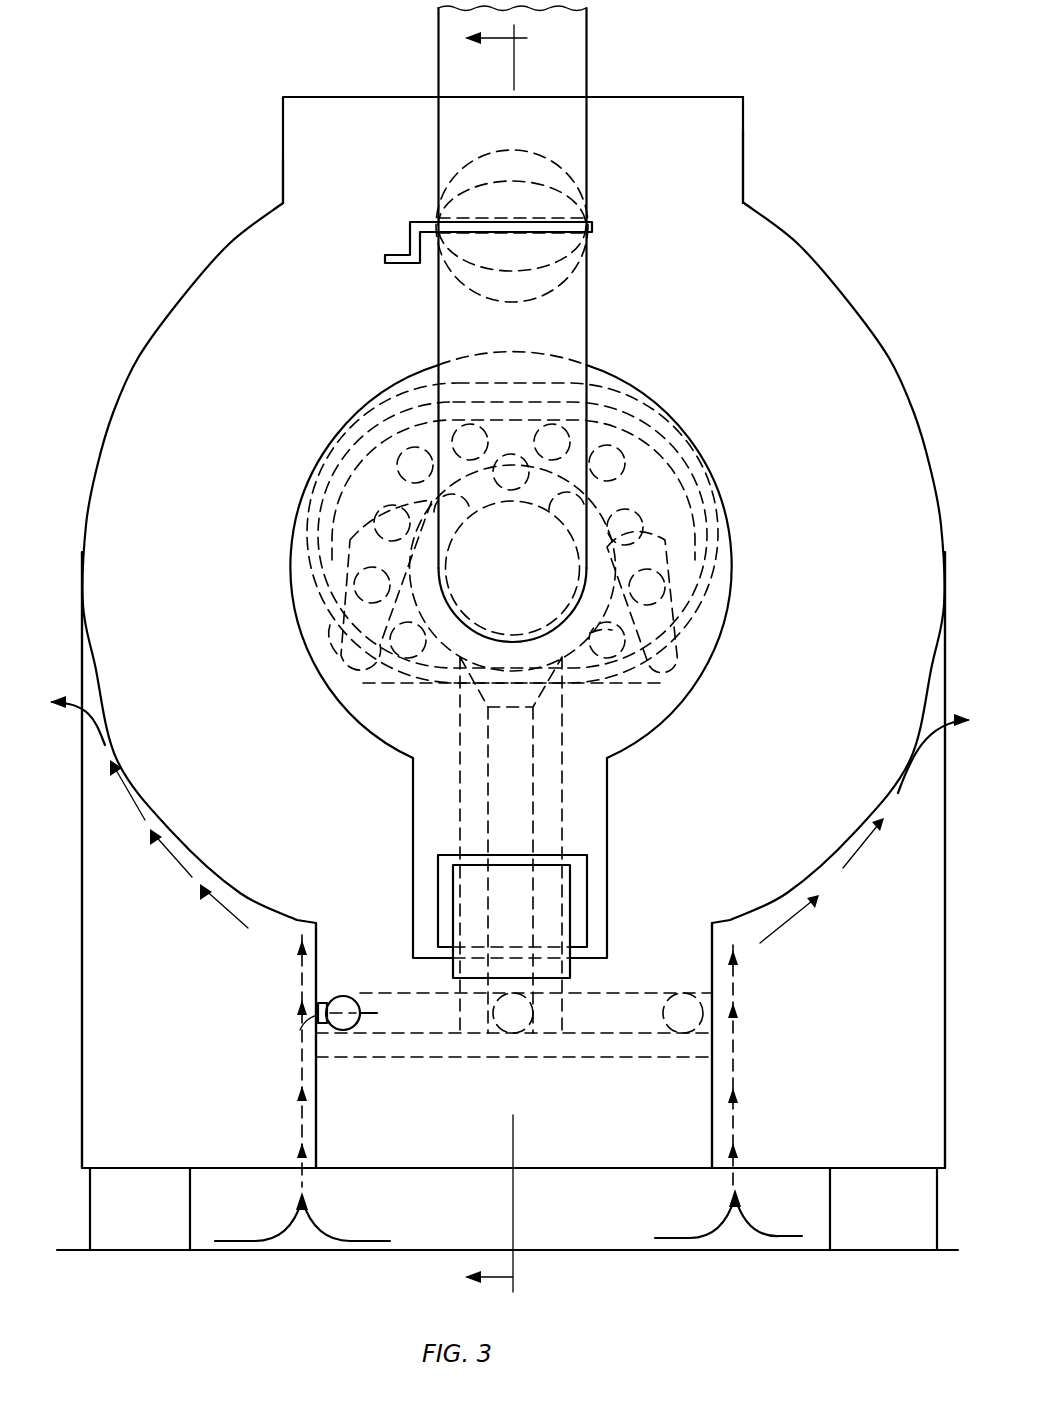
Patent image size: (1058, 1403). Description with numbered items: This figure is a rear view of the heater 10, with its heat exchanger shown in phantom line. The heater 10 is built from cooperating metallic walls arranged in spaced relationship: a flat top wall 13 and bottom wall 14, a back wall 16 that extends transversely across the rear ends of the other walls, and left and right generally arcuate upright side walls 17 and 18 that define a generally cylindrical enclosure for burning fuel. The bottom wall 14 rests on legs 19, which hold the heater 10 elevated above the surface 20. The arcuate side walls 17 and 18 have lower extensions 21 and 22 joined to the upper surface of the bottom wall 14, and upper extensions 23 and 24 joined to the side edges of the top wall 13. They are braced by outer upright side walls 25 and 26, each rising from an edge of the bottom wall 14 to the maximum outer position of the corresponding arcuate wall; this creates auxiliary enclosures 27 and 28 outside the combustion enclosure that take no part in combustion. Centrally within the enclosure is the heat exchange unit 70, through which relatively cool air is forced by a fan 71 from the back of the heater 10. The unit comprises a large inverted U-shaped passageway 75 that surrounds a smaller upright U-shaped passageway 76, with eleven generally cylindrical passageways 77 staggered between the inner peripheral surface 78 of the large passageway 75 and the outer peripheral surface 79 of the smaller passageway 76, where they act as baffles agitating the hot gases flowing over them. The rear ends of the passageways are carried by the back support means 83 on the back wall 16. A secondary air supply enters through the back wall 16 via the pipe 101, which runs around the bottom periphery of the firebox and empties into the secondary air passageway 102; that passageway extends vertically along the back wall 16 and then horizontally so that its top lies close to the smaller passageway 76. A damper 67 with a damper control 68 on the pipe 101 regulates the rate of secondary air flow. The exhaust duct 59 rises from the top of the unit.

The heater 10 is at (235, 115).
The top wall 13 is at (708, 97).
The bottom wall 14 is at (440, 1168).
The back wall 16 is at (174, 408).
The left arcuate side wall 17 is at (139, 357).
The right arcuate side wall 18 is at (870, 330).
The legs 19 is at (116, 1225).
The surface 20 is at (443, 1250).
The left lower extension 21 is at (712, 1097).
The right lower extension 22 is at (318, 1100).
The left upper extension 23 is at (283, 166).
The right upper extension 24 is at (745, 145).
The left upright side wall 25 is at (82, 950).
The right upright side wall 26 is at (945, 918).
The left auxiliary enclosure 27 is at (129, 961).
The right auxiliary enclosure 28 is at (807, 1019).
The exhaust duct 59 is at (588, 48).
The damper 67 is at (345, 1008).
The damper control 68 is at (300, 1030).
The heat exchange unit 70 is at (398, 410).
The fan 71 is at (572, 968).
The large passageway 75 is at (330, 625).
The smaller passageway 76 is at (597, 590).
The cylindrical passageways 77 is at (372, 550).
The inner peripheral surface 78 is at (642, 576).
The outer peripheral surface 79 is at (612, 630).
The back support means 83 is at (570, 686).
The pipe 101 is at (340, 1000).
The secondary air passageway 102 is at (495, 832).